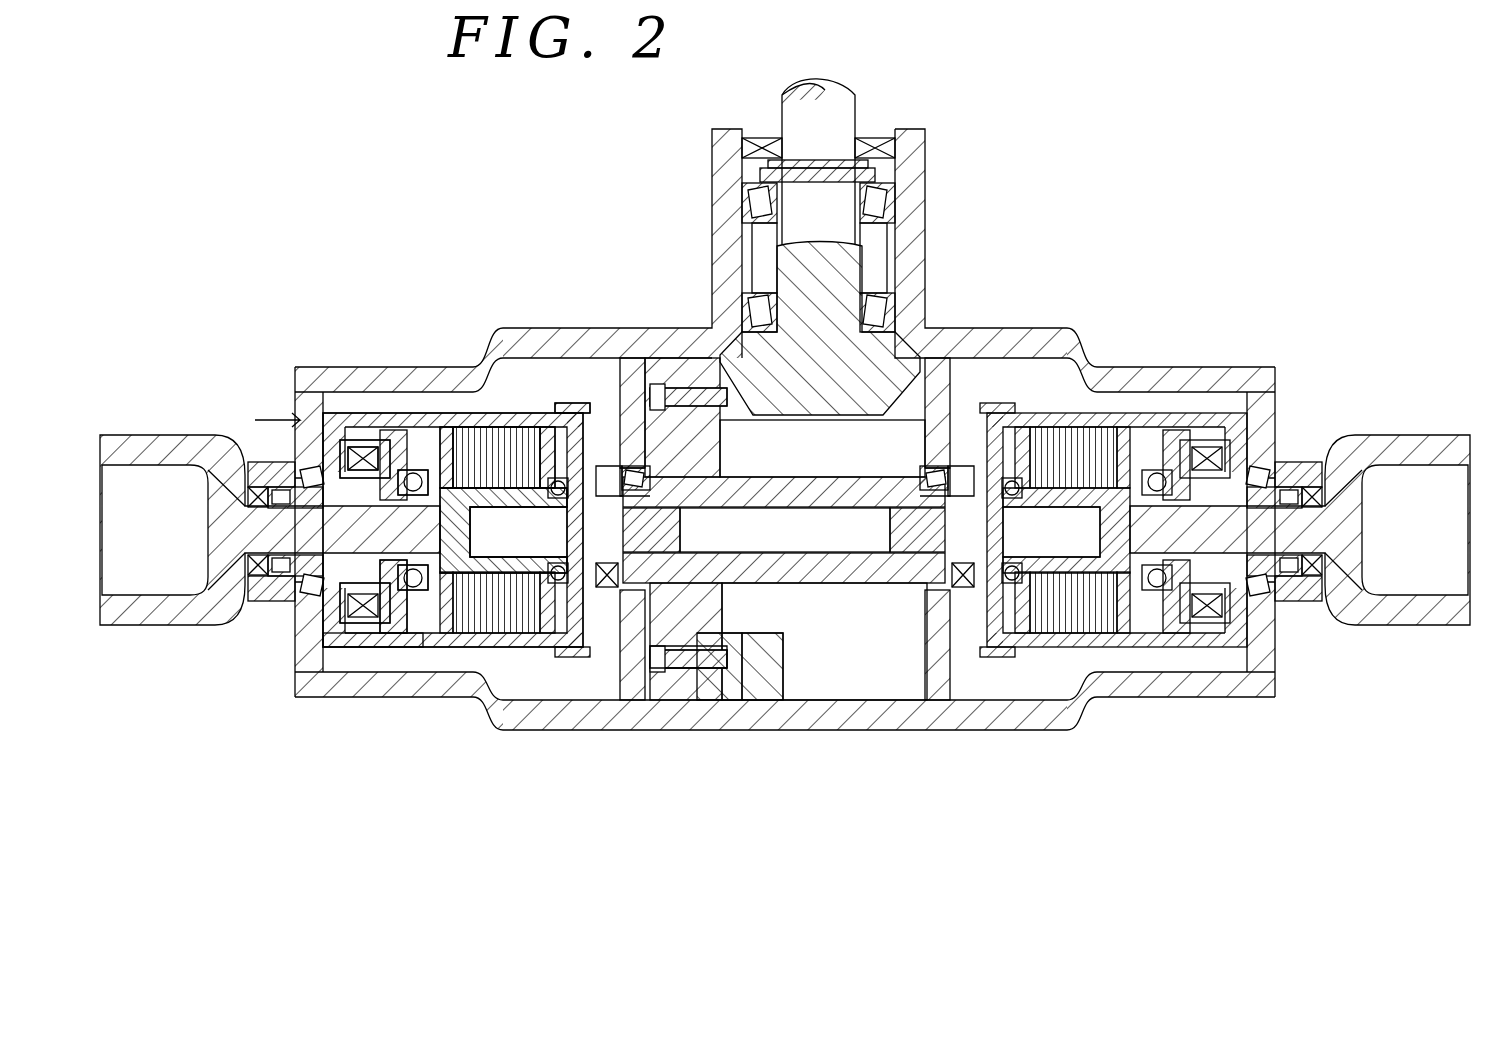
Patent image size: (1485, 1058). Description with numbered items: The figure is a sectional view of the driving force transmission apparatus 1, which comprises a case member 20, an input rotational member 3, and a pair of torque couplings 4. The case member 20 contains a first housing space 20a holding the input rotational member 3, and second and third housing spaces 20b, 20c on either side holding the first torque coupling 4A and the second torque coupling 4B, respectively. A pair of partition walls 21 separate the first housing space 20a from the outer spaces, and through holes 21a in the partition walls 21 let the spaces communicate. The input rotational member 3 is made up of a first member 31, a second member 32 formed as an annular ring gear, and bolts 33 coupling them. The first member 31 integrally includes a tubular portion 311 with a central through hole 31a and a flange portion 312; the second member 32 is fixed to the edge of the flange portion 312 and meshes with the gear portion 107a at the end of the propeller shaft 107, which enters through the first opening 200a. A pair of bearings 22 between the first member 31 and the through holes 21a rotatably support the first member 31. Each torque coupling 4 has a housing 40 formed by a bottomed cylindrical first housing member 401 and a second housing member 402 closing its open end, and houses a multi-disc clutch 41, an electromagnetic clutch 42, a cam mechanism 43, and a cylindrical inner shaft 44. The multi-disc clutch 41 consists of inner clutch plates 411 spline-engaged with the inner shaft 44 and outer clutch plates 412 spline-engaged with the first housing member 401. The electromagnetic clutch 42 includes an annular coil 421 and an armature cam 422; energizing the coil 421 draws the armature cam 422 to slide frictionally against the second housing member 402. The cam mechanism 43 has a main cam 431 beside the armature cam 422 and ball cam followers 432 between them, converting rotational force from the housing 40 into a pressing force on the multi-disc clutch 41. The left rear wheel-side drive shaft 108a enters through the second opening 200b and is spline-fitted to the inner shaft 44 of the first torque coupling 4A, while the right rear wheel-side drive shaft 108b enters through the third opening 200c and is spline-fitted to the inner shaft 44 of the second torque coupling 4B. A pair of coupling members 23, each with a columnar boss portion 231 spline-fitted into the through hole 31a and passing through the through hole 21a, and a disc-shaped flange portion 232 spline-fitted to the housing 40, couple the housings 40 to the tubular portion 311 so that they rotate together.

The driving force transmission apparatus 1 is at (400, 138).
The input rotational member 3 is at (792, 822).
The torque coupling 4 is at (704, 505).
The first torque coupling 4A is at (443, 403).
The second torque coupling 4B is at (1130, 405).
The case member 20 is at (905, 210).
The first housing space 20a is at (845, 688).
The second housing space 20b is at (538, 685).
The third housing space 20c is at (1050, 685).
The partition wall 21 is at (942, 655).
The through hole 21a is at (624, 468).
The bearing 22 is at (652, 480).
The coupling member 23 is at (578, 660).
The first member 31 is at (746, 783).
The through hole 31a is at (810, 538).
The second member 32 is at (752, 690).
The bolt 33 is at (640, 690).
The housing 40 is at (523, 405).
The multi-disc clutch 41 is at (524, 268).
The electromagnetic clutch 42 is at (200, 343).
The cam mechanism 43 is at (425, 598).
The inner shaft 44 is at (432, 462).
The propeller shaft 107 is at (847, 108).
The gear portion 107a is at (900, 336).
The left rear wheel-side drive shaft 108a is at (258, 535).
The right rear wheel-side drive shaft 108b is at (1262, 540).
The first opening 200a is at (755, 125).
The second opening 200b is at (245, 603).
The third opening 200c is at (1323, 448).
The boss portion 231 is at (662, 528).
The flange portion 232 is at (567, 410).
The tubular portion 311 is at (733, 640).
The flange portion 312 is at (688, 640).
The first housing member 401 is at (347, 648).
The second housing member 402 is at (352, 628).
The inner clutch plate 411 is at (472, 422).
The outer clutch plate 412 is at (448, 422).
The coil 421 is at (345, 470).
The armature cam 422 is at (340, 452).
The main cam 431 is at (445, 590).
The cam follower 432 is at (395, 630).